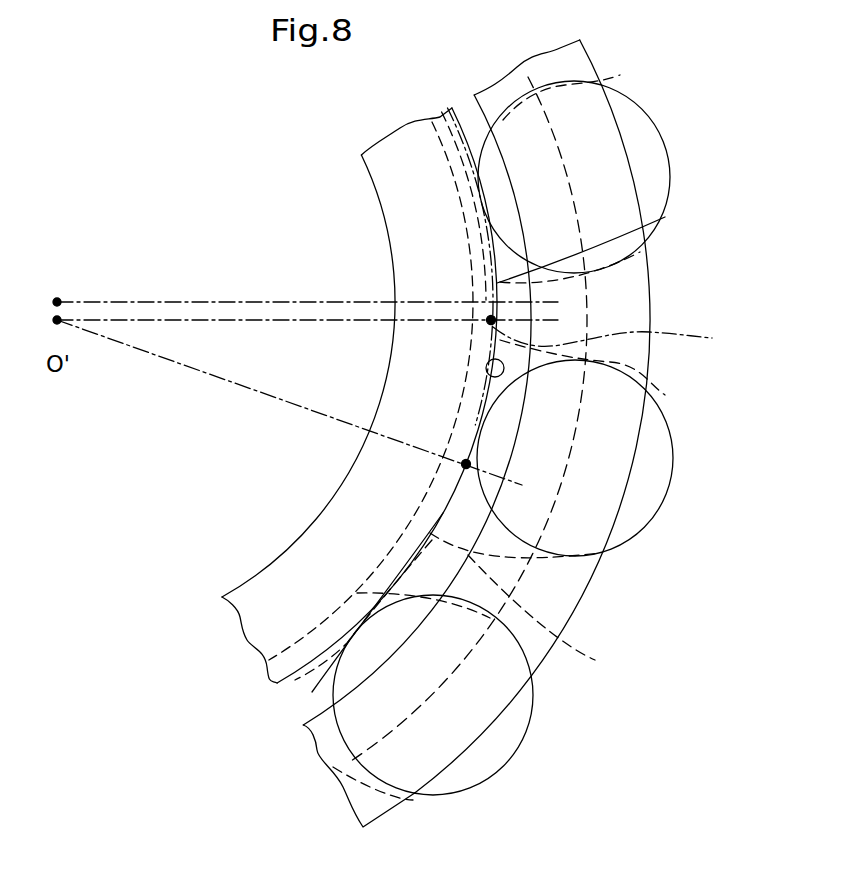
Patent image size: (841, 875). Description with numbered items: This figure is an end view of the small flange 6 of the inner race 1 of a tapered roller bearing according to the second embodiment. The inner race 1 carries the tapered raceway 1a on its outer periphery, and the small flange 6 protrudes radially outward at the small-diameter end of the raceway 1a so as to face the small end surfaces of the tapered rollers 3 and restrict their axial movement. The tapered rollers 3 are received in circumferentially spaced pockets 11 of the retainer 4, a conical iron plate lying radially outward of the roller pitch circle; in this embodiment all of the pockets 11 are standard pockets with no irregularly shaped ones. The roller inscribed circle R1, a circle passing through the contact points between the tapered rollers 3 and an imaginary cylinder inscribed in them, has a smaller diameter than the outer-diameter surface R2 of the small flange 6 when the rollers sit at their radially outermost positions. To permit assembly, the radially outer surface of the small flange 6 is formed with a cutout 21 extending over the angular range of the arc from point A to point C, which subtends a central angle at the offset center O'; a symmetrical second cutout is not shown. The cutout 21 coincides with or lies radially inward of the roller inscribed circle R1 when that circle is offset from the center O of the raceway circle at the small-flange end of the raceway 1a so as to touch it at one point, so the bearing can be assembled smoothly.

The inner race 1 is at (263, 613).
The tapered raceway 1a is at (595, 660).
The tapered rollers 3 is at (655, 158).
The retainer 4 is at (330, 735).
The small flange 6 is at (665, 217).
The pockets 11 is at (620, 75).
The cutout 21 is at (488, 370).
The roller inscribed circle R1 is at (448, 120).
The outer-diameter surface of the small flange R2 is at (618, 340).
The arc end point A is at (491, 320).
The arc end point C is at (466, 464).
The center O is at (55, 282).